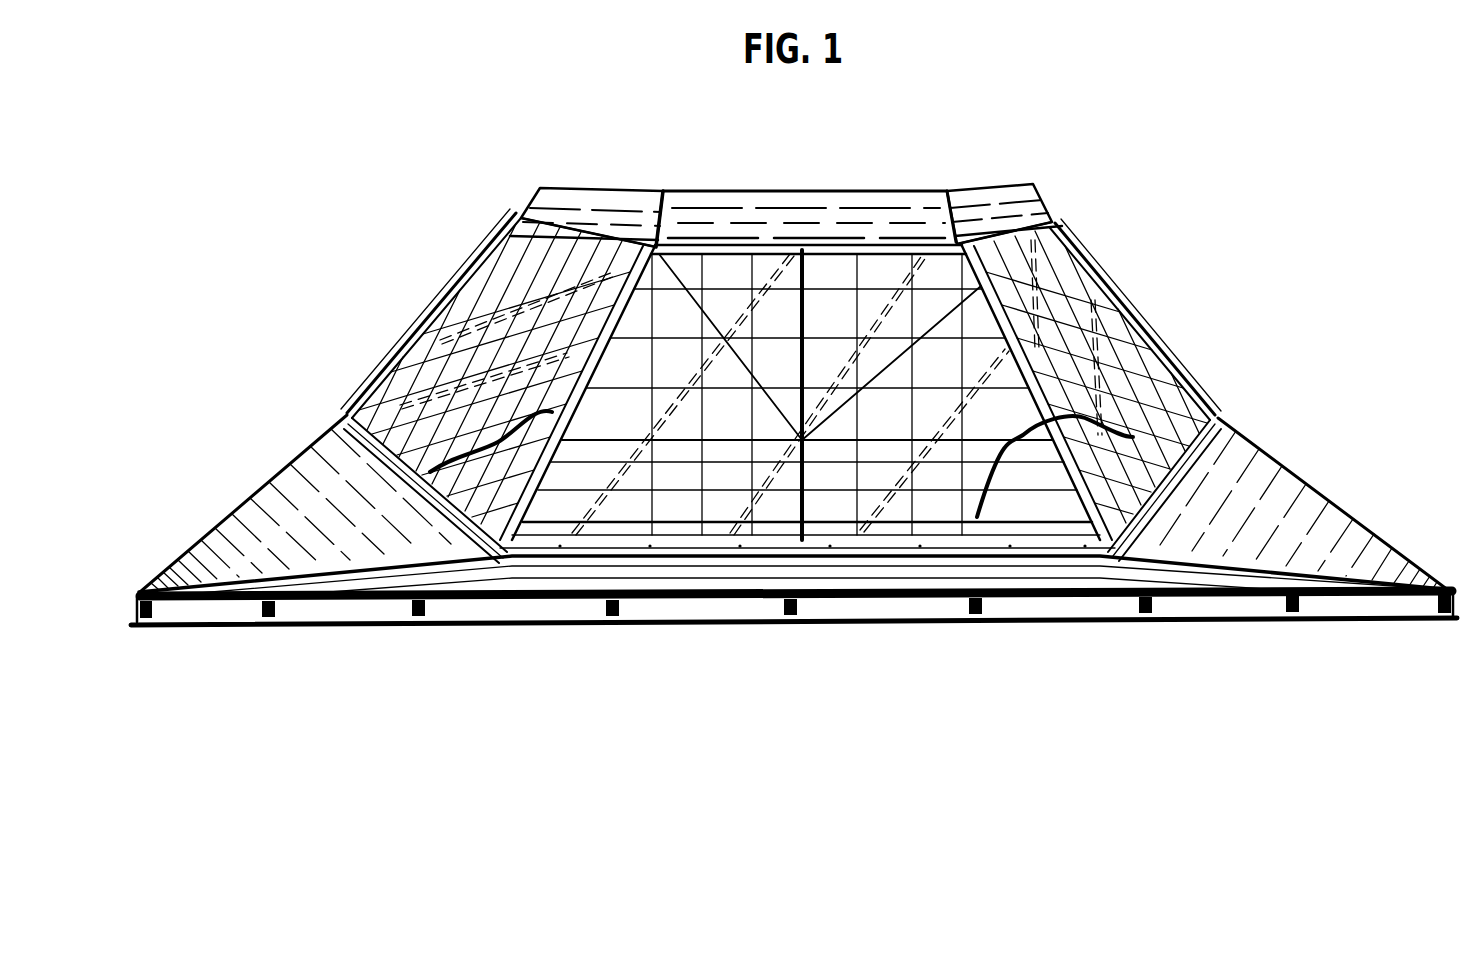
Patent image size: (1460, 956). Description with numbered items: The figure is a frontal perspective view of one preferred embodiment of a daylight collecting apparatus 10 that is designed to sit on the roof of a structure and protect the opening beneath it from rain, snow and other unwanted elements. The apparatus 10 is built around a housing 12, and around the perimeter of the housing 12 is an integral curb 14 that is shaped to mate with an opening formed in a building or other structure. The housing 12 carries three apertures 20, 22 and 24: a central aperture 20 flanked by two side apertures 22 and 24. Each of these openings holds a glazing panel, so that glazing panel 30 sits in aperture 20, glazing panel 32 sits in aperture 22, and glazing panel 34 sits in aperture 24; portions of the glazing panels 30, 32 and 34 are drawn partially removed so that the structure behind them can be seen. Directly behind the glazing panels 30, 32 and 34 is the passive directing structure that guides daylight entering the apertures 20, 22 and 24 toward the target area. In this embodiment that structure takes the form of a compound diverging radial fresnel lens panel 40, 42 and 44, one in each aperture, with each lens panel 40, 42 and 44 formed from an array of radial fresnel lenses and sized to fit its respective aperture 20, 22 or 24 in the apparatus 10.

The apparatus 10 is at (1162, 241).
The housing 12 is at (290, 482).
The curb 14 is at (138, 601).
The aperture 20 is at (873, 243).
The aperture 22 is at (622, 232).
The aperture 24 is at (1052, 222).
The glazing panel 30 is at (776, 262).
The glazing panel 32 is at (424, 366).
The glazing panel 34 is at (1150, 352).
The compound diverging radial fresnel lens panel 40 is at (1050, 507).
The compound diverging radial fresnel lens panel 42 is at (462, 521).
The compound diverging radial fresnel lens panel 44 is at (1148, 505).